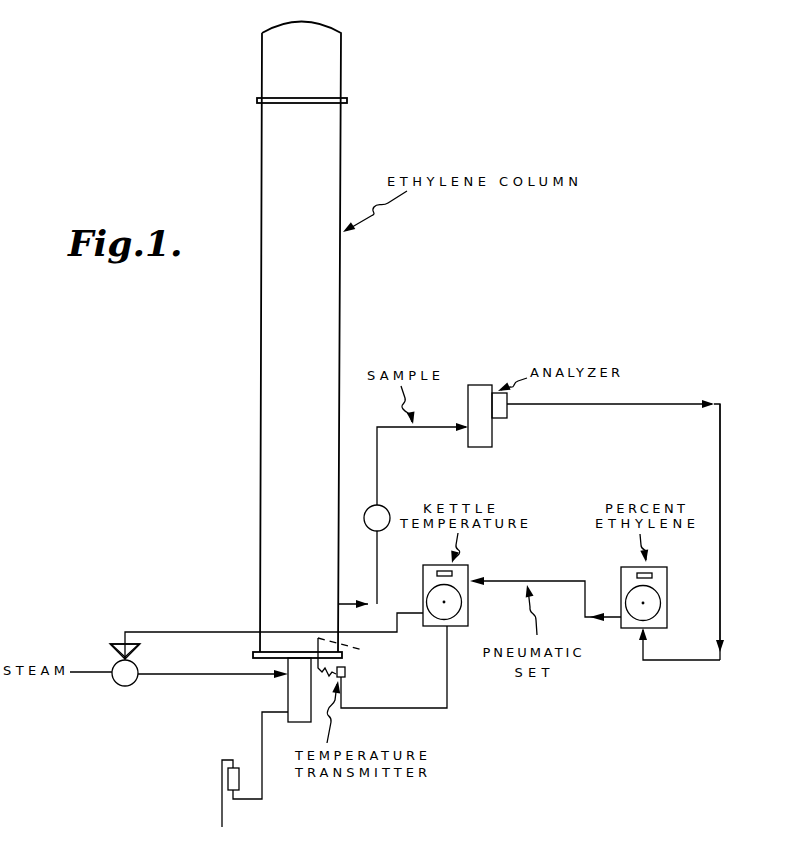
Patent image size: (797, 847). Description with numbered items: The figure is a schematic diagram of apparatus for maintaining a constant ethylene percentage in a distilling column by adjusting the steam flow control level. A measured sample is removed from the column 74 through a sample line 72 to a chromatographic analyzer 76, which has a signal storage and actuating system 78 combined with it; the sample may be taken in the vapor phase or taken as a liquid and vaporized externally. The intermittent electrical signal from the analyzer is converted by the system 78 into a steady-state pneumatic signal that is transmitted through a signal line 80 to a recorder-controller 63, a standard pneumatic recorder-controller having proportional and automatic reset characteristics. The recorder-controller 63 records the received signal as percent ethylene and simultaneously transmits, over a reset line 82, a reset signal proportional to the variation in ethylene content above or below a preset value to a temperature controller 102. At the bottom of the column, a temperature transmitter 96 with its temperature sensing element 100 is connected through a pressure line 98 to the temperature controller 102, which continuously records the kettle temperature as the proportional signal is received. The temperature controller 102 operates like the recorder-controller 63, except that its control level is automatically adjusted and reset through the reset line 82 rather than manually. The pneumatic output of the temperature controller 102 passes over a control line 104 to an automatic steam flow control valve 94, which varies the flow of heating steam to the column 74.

The column 74 is at (283, 330).
The sample line 72 is at (379, 473).
The chromatographic analyzer 76 is at (478, 396).
The signal storage and actuating system 78 is at (500, 411).
The signal line 80 is at (655, 406).
The recorder-controller 63 is at (660, 583).
The reset line 82 is at (557, 579).
The temperature controller 102 is at (463, 571).
The control line 104 is at (178, 629).
The automatic steam flow control valve 94 is at (136, 681).
The temperature sensing element 100 is at (360, 651).
The temperature transmitter 96 is at (346, 673).
The pressure line 98 is at (449, 698).